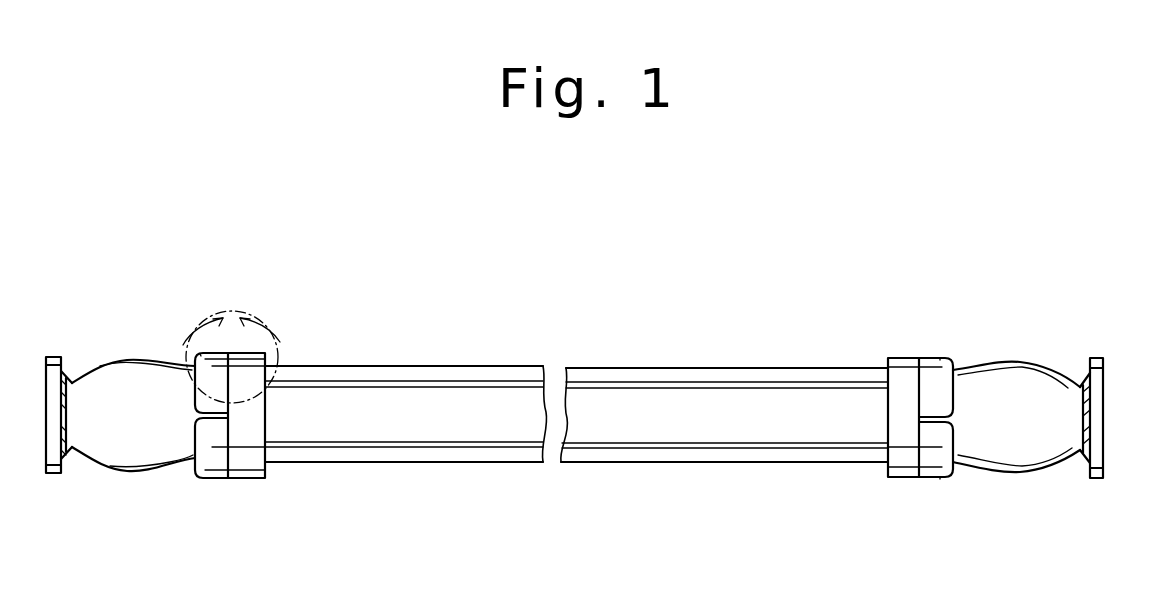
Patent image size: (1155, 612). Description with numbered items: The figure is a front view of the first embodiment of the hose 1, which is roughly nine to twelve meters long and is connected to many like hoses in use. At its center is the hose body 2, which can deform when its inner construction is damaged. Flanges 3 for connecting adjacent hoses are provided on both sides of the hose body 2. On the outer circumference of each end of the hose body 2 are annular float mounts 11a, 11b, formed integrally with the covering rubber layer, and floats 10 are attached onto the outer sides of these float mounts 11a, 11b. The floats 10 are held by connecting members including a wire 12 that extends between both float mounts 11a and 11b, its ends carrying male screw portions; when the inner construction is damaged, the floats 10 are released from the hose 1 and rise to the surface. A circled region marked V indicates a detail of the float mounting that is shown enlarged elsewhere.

The hose 1 is at (669, 364).
The hose body 2 is at (797, 398).
The flange 3 is at (1097, 357).
The float 10 is at (200, 354).
The float mount 11a is at (258, 350).
The float mount 11b is at (903, 358).
The wire 12 is at (486, 378).
The detail view circle V is at (208, 330).